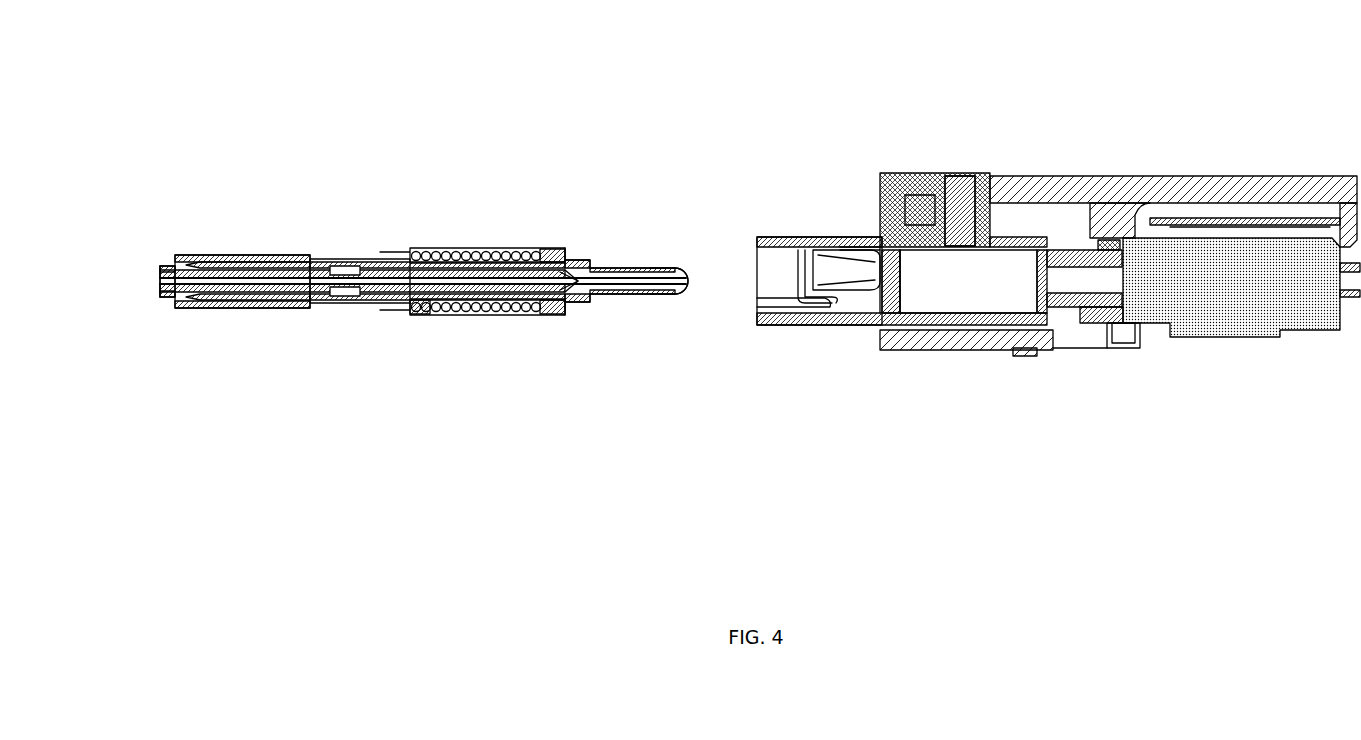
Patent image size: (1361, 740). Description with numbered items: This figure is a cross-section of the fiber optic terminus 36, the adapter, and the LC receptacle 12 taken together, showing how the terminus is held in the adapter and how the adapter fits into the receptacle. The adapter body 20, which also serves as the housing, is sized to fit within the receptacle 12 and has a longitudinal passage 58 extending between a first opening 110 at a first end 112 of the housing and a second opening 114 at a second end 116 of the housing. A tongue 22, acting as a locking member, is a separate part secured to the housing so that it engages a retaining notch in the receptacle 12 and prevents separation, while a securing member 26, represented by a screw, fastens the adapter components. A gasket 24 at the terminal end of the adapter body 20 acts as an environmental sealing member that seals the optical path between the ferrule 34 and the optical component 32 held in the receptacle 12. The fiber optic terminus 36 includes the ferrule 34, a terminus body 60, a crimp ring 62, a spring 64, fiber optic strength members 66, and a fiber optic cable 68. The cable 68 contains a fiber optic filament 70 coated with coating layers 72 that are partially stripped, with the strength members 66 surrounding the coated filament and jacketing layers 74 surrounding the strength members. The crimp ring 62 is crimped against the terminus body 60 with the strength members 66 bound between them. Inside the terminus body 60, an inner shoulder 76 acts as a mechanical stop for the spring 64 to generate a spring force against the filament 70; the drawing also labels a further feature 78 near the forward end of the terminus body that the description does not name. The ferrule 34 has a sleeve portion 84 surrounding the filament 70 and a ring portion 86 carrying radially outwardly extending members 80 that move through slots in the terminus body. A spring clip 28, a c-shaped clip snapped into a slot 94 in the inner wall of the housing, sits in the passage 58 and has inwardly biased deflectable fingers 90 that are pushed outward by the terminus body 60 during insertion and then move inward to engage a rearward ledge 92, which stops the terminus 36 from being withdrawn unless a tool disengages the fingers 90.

The LC receptacle 12 is at (932, 360).
The adapter body 20 is at (818, 238).
The tongue 22 is at (890, 174).
The gasket 24 is at (1105, 340).
The securing member 26 is at (968, 174).
The spring clip 28 is at (808, 252).
The optical component 32 is at (1205, 338).
The ferrule 34 is at (630, 305).
The fiber optic terminus 36 is at (372, 348).
The longitudinal passage 58 is at (968, 281).
The terminus body 60 is at (462, 249).
The crimp ring 62 is at (247, 310).
The spring 64 is at (490, 312).
The fiber optic strength members 66 is at (246, 266).
The fiber optic cable 68 is at (152, 284).
The fiber optic filament 70 is at (590, 292).
The coating layers 72 is at (300, 292).
The jacketing layers 74 is at (174, 258).
The inner shoulder 76 is at (422, 312).
The upper shoulder 78 is at (546, 250).
The radially outwardly extending members 80 is at (551, 312).
The sleeve portion 84 is at (632, 272).
The ring portion 86 is at (572, 262).
The deflectable fingers 90 is at (848, 275).
The rearward ledge 92 is at (402, 250).
The slot 94 is at (870, 245).
The first opening 110 is at (1117, 246).
The first end 112 is at (1102, 240).
The second opening 114 is at (755, 252).
The second end 116 is at (766, 238).